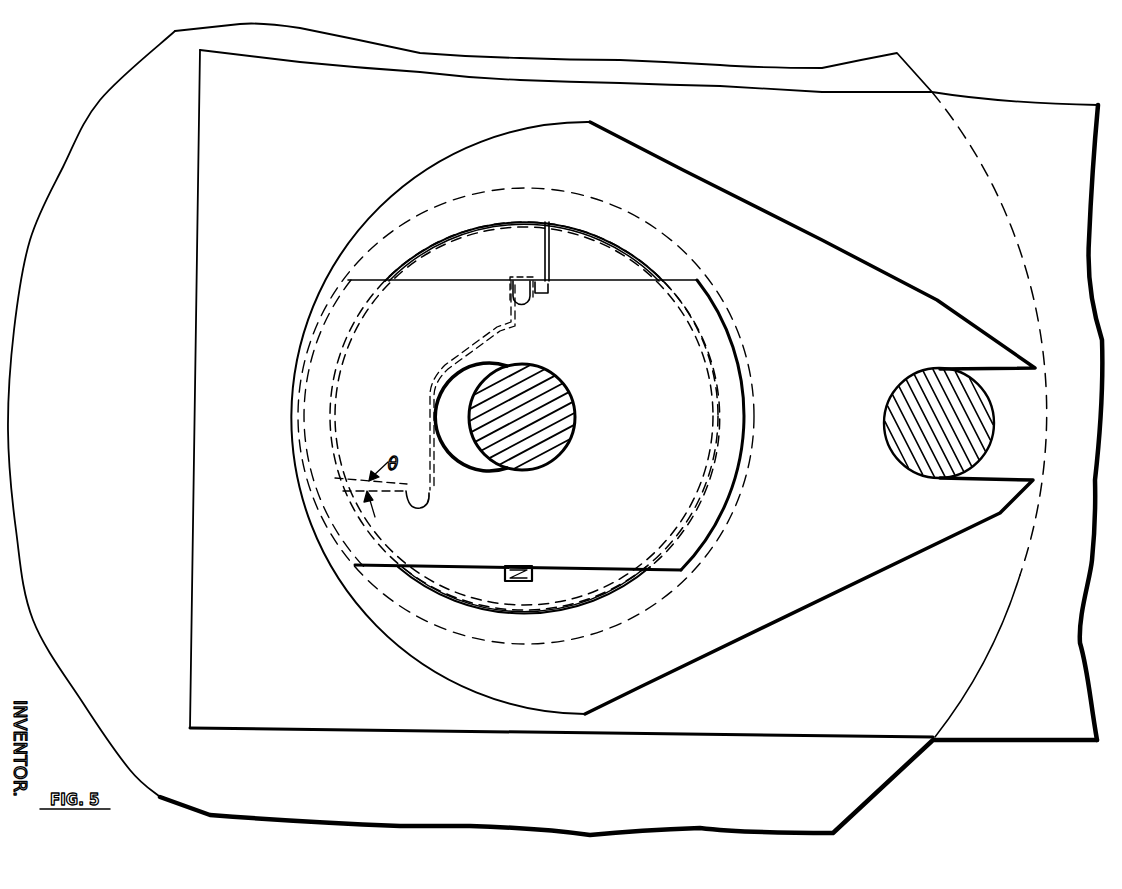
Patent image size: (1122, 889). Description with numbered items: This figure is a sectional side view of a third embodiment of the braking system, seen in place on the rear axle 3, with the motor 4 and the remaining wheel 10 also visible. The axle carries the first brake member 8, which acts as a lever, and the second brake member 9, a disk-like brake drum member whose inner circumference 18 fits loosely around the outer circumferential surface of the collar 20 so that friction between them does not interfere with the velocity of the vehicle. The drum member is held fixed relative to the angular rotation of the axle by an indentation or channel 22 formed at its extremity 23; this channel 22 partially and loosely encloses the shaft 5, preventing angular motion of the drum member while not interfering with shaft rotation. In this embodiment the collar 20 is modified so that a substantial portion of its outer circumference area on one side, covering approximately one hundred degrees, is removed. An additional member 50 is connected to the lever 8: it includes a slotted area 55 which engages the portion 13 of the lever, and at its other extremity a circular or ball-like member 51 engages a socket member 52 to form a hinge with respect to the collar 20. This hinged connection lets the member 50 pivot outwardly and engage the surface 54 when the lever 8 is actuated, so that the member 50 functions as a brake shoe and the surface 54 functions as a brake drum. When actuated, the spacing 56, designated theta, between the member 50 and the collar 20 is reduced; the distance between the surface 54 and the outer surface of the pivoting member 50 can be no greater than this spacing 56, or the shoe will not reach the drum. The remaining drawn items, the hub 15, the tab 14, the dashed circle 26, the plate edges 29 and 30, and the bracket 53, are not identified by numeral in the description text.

The rear axle 3 is at (512, 428).
The motor 4 is at (884, 655).
The shaft 5 is at (953, 445).
The first brake member 8 is at (641, 347).
The second brake member 9 is at (853, 523).
The wheel 10 is at (73, 563).
The portion 13 is at (526, 297).
The tab 14 is at (525, 567).
The hub 15 is at (472, 450).
The inner circumference 18 is at (566, 609).
The collar 20 is at (593, 269).
The channel 22 is at (1002, 417).
The extremity 23 is at (997, 353).
The outer circle 26 is at (588, 201).
The plate edge 29 is at (736, 472).
The plate edge 30 is at (309, 490).
The member 50 is at (395, 424).
The ball-like member 51 is at (419, 503).
The socket member 52 is at (408, 495).
The bracket 53 is at (549, 288).
The surface 54 is at (425, 249).
The slotted area 55 is at (512, 279).
The spacing 56 is at (358, 480).